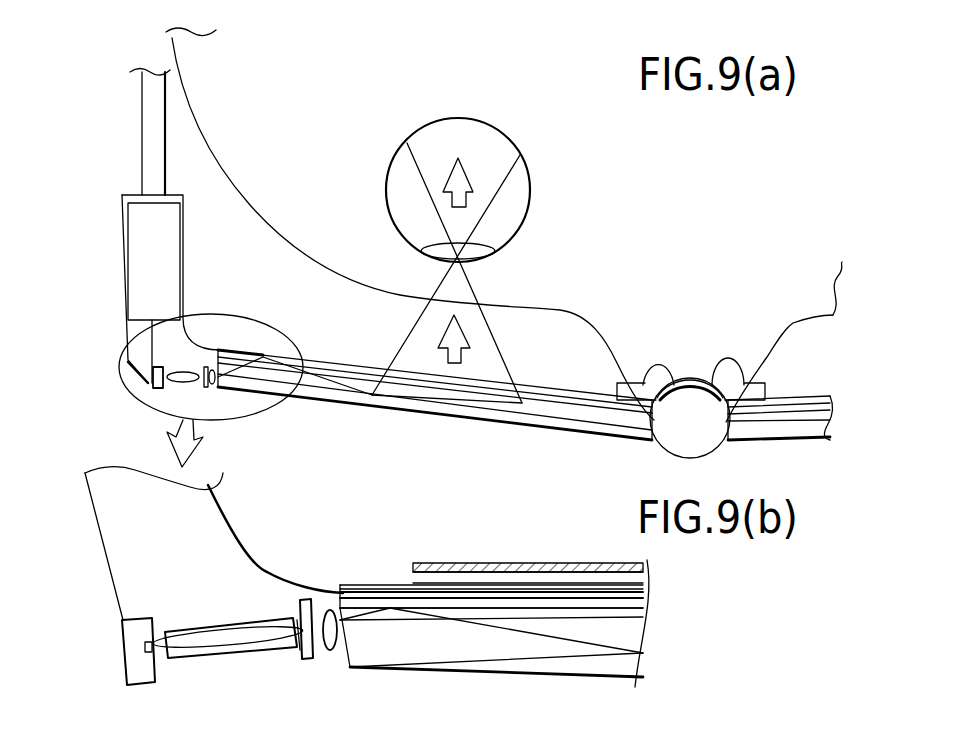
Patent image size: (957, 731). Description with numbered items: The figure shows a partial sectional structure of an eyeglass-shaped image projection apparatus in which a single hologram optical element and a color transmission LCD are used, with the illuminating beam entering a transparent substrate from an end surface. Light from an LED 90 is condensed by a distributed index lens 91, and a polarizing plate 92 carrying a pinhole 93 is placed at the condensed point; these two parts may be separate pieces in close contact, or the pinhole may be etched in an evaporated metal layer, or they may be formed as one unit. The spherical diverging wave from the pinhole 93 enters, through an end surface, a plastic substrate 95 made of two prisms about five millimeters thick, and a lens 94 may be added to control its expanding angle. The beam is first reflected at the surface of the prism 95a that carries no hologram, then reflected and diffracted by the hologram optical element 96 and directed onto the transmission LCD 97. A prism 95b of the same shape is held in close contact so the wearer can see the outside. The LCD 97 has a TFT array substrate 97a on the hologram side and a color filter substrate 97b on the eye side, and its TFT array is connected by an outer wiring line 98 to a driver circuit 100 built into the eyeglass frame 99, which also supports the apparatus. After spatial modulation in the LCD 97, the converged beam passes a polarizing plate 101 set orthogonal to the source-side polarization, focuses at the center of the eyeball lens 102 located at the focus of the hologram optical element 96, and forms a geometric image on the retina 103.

In FIG. 9B, the LED 90 is at (140, 620).
In FIG. 9B, the distributed index lens 91 is at (232, 653).
In FIG. 9B, the polarizing plate 92 is at (307, 642).
In FIG. 9B, the pinhole 93 is at (310, 650).
In FIG. 9B, the lens 94 is at (332, 650).
In FIG. 9B, the plastic substrate 95 is at (654, 640).
In FIG. 9A, the prism 95a is at (290, 380).
In FIG. 9B, the prism 95a is at (410, 650).
In FIG. 9A, the prism 95b is at (495, 423).
In FIG. 9B, the prism 95b is at (580, 665).
In FIG. 9A, the hologram optical element 96 is at (428, 403).
In FIG. 9B, the transmission LCD 97 is at (647, 587).
In FIG. 9B, the TFT array substrate 97a is at (397, 597).
In FIG. 9B, the color filter substrate 97b is at (480, 577).
In FIG. 9B, the outer wiring line 98 is at (223, 512).
In FIG. 9A, the frame 99 is at (145, 155).
In FIG. 9A, the driver circuit 100 is at (173, 277).
In FIG. 9B, the polarizing plate 101 is at (648, 577).
In FIG. 9A, the eyeball lens 102 is at (420, 245).
In FIG. 9A, the retina 103 is at (463, 118).